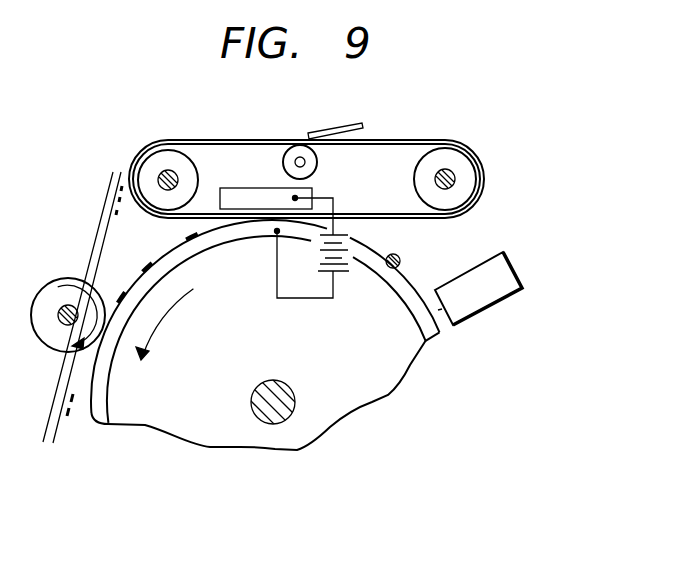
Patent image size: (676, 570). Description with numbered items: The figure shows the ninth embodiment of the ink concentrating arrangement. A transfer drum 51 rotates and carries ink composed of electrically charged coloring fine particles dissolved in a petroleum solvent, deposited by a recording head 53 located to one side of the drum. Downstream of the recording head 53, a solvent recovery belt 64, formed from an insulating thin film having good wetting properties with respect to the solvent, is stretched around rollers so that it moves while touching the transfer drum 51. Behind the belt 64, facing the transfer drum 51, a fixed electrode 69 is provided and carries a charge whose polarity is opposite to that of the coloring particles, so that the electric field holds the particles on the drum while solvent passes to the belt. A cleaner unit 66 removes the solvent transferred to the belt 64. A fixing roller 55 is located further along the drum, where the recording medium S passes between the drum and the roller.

The transfer drum 51 is at (145, 414).
The recording head 53 is at (505, 290).
The fixing roller 55 is at (55, 290).
The solvent recovery belt 64 is at (262, 137).
The cleaner unit 66 is at (338, 166).
The fixed electrode 69 is at (258, 195).
The recording sheet S is at (112, 203).